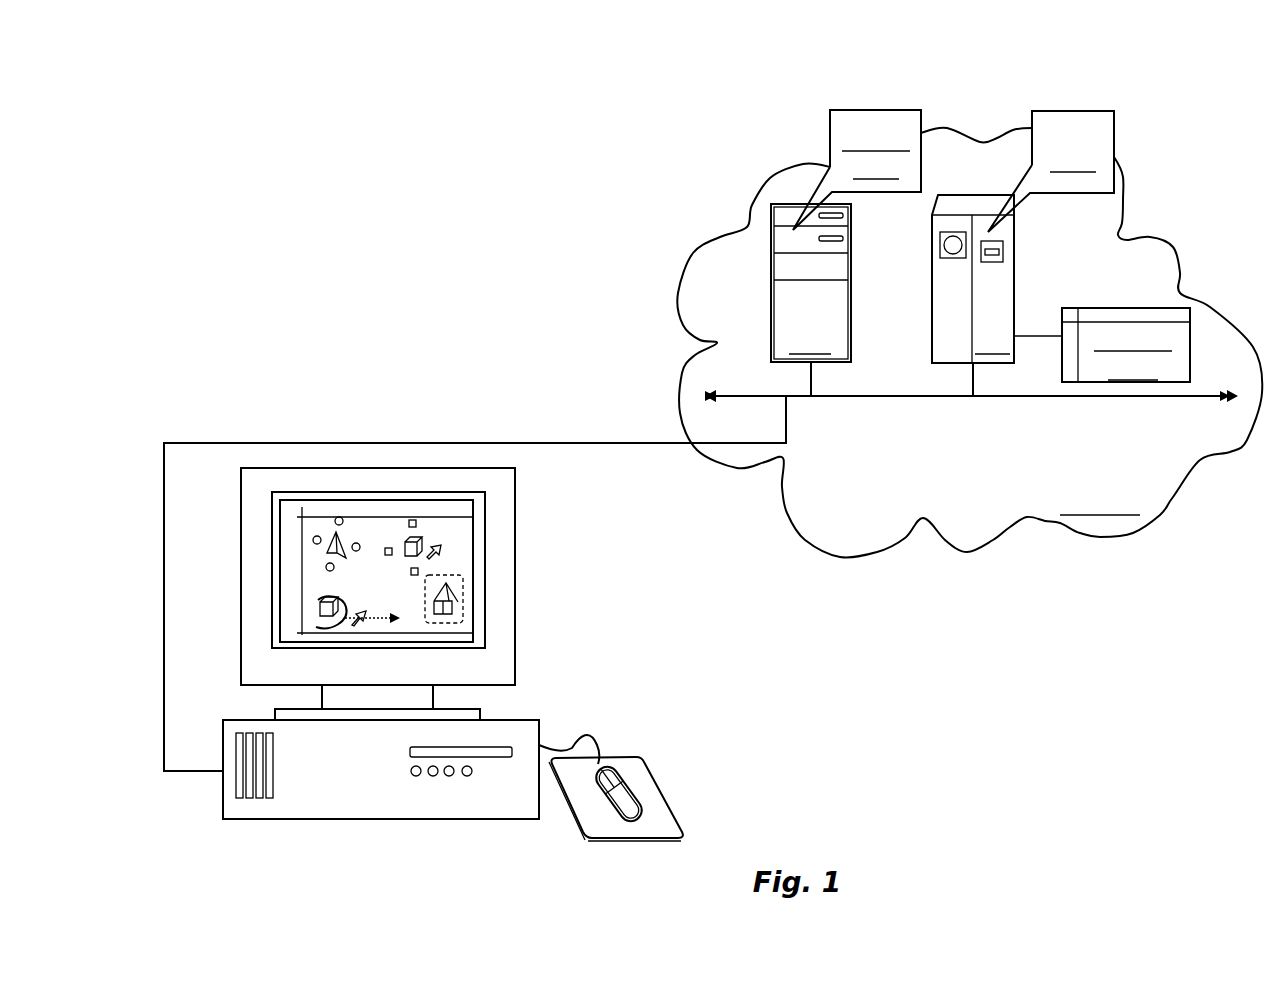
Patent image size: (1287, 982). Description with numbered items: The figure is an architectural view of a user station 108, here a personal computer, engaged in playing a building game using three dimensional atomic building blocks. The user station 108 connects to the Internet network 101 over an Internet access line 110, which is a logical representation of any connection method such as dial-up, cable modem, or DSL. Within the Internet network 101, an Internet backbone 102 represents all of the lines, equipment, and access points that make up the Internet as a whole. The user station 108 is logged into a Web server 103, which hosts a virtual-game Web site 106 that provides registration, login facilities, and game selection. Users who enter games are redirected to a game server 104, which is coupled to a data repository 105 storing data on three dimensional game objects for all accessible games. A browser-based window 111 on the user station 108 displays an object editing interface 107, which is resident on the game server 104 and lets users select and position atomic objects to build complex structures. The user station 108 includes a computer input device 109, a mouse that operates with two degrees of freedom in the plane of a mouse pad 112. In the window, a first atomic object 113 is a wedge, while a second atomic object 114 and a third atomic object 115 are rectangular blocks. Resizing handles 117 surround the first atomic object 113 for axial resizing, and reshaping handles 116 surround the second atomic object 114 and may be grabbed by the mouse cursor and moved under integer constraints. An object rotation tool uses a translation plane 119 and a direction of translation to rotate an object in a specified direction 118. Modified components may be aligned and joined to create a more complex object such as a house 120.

The Internet network 101 is at (715, 343).
The Internet backbone 102 is at (930, 397).
The Web server 103 is at (851, 270).
The game server 104 is at (1016, 262).
The data repository 105 is at (1130, 308).
The virtual-game Web site 106 is at (878, 110).
The object editing interface 107 is at (1075, 111).
The user station 108 is at (523, 561).
The computer input device 109 is at (642, 795).
The Internet access line 110 is at (368, 443).
The browser-based window 111 is at (443, 643).
The mouse pad 112 is at (677, 815).
The first atomic object 113 is at (334, 535).
The second atomic object 114 is at (422, 540).
The third atomic object 115 is at (305, 598).
The reshaping handles 116 is at (409, 523).
The resizing handles 117 is at (358, 546).
The rotation direction 118 is at (332, 595).
The translation plane 119 is at (357, 627).
The house 120 is at (463, 597).